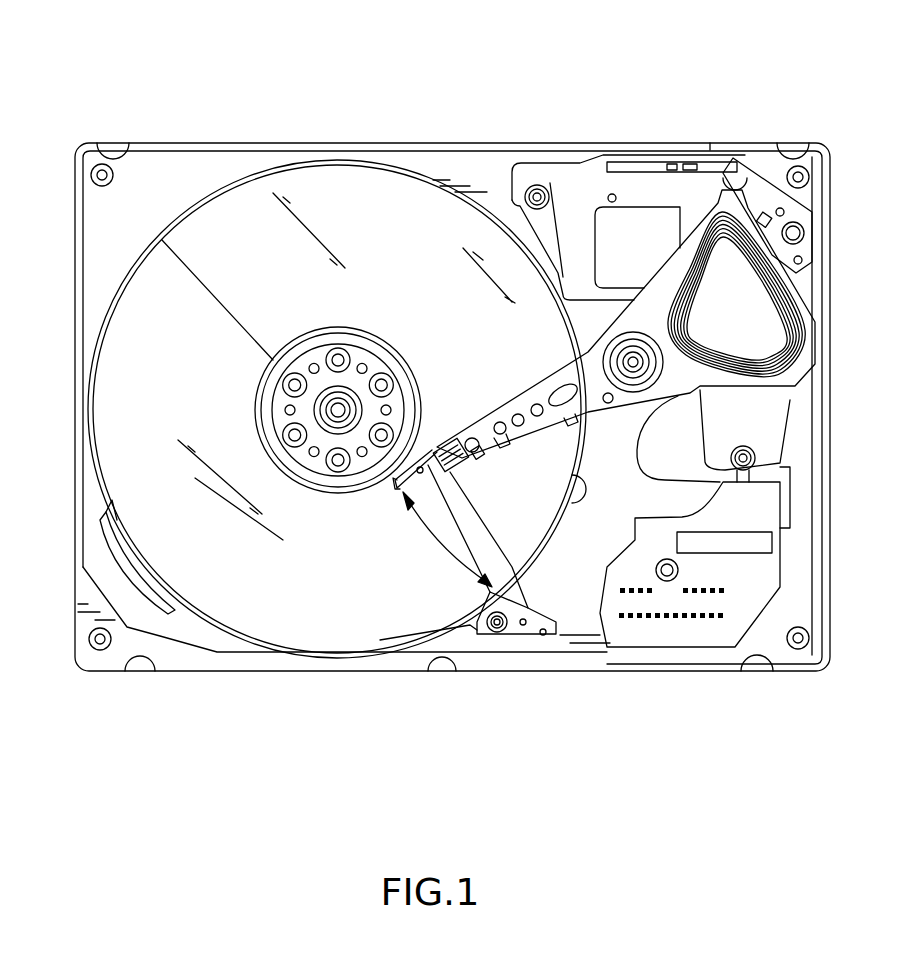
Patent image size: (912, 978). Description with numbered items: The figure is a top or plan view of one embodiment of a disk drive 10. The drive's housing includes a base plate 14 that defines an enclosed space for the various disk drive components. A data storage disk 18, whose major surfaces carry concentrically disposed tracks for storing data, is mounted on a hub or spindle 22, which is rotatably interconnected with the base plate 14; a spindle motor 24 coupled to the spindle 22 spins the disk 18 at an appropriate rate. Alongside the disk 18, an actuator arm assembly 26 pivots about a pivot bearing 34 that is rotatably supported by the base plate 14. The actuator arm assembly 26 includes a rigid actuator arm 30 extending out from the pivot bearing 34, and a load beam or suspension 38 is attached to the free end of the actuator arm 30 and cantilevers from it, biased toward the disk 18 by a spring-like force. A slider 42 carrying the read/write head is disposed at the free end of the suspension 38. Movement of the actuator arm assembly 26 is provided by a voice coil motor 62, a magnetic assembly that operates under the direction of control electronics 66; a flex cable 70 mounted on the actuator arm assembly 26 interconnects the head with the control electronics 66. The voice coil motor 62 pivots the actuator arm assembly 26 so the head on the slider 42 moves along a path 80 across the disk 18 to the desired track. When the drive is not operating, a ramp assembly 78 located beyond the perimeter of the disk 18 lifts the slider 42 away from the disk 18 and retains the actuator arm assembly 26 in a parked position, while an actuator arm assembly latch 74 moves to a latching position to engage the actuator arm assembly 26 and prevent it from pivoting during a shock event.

The disk drive 10 is at (86, 105).
The base plate 14 is at (241, 143).
The data storage disk 18 is at (350, 183).
The spindle 22 is at (387, 336).
The spindle motor 24 is at (320, 387).
The actuator arm assembly 26 is at (534, 381).
The actuator arm 30 is at (505, 442).
The pivot bearing 34 is at (632, 380).
The suspension 38 is at (433, 443).
The slider 42 is at (400, 490).
The voice coil motor 62 is at (808, 302).
The control electronics 66 is at (675, 622).
The flex cable 70 is at (638, 480).
The actuator arm assembly latch 74 is at (725, 162).
The ramp assembly 78 is at (524, 637).
The path 80 is at (434, 540).